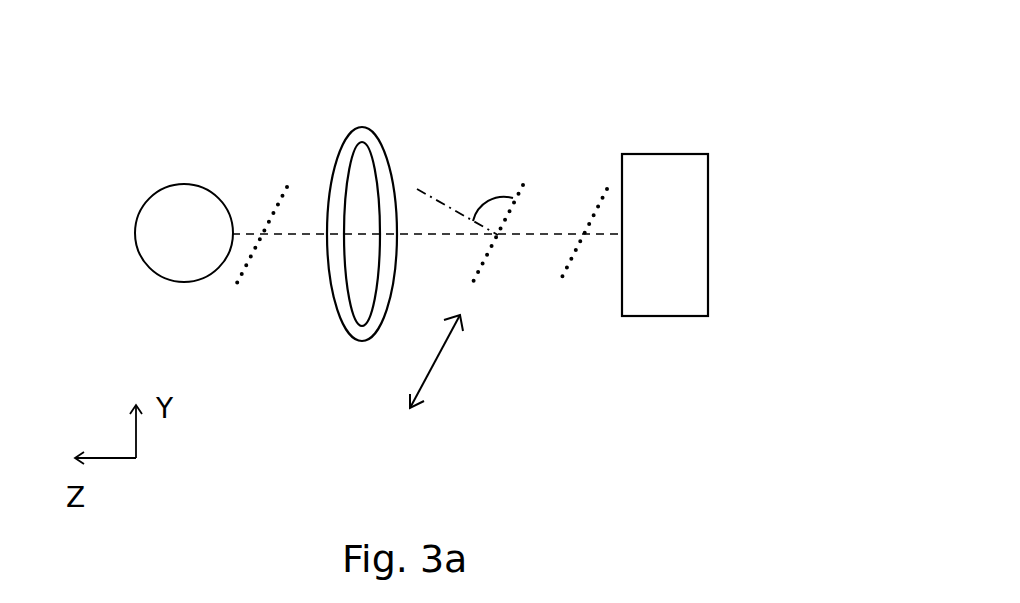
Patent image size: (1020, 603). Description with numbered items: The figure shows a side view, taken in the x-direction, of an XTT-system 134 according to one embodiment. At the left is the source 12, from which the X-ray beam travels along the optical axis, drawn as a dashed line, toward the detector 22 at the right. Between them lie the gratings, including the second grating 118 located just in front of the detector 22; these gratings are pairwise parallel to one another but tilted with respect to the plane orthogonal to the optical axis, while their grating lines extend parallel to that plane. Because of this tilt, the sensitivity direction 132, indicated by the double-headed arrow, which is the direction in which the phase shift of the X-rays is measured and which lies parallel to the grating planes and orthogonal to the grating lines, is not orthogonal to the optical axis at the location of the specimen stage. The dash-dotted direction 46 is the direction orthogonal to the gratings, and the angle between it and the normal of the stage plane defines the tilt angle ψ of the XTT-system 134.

The source 12 is at (184, 185).
The direction orthogonal to the gratings 46 is at (435, 198).
The detector 22 is at (708, 200).
The second grating 118 is at (565, 273).
The sensitivity direction 132 is at (432, 367).
The XTT-system 134 is at (590, 66).